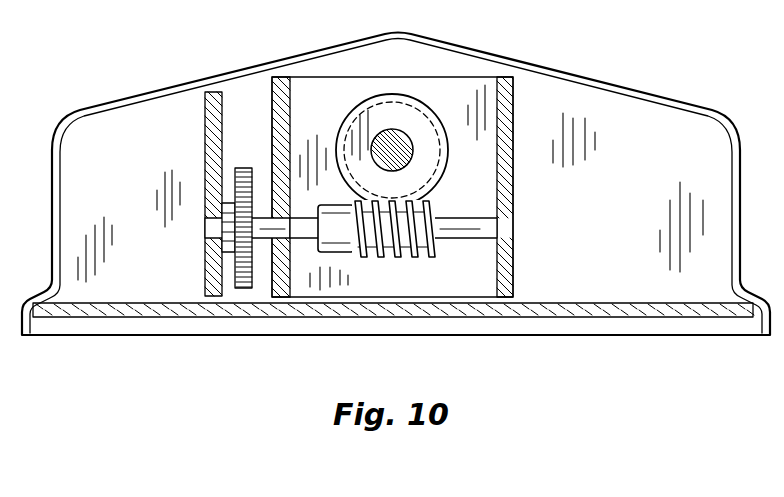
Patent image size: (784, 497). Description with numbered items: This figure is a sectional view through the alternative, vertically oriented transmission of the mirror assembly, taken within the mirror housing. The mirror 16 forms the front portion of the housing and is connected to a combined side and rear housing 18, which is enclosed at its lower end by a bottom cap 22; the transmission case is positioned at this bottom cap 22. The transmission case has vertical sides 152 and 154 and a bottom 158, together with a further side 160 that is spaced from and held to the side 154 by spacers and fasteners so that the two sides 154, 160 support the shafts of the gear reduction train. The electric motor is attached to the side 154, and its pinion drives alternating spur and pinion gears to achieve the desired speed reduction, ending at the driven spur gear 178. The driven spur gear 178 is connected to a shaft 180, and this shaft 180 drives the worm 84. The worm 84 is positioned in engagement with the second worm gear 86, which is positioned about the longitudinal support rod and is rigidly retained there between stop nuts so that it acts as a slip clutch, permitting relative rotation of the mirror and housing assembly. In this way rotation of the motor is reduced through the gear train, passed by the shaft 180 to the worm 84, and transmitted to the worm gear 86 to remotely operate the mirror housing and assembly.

The mirror 16 is at (500, 315).
The combined side and rear housing 18 is at (652, 95).
The bottom cap 22 is at (104, 196).
The second worm 84 is at (378, 258).
The second worm gear 86 is at (437, 115).
The vertical side 152 is at (505, 260).
The vertical side 154 is at (272, 93).
The bottom 158 is at (337, 111).
The side 160 is at (207, 130).
The driven spur gear 178 is at (247, 270).
The shaft 180 is at (467, 222).